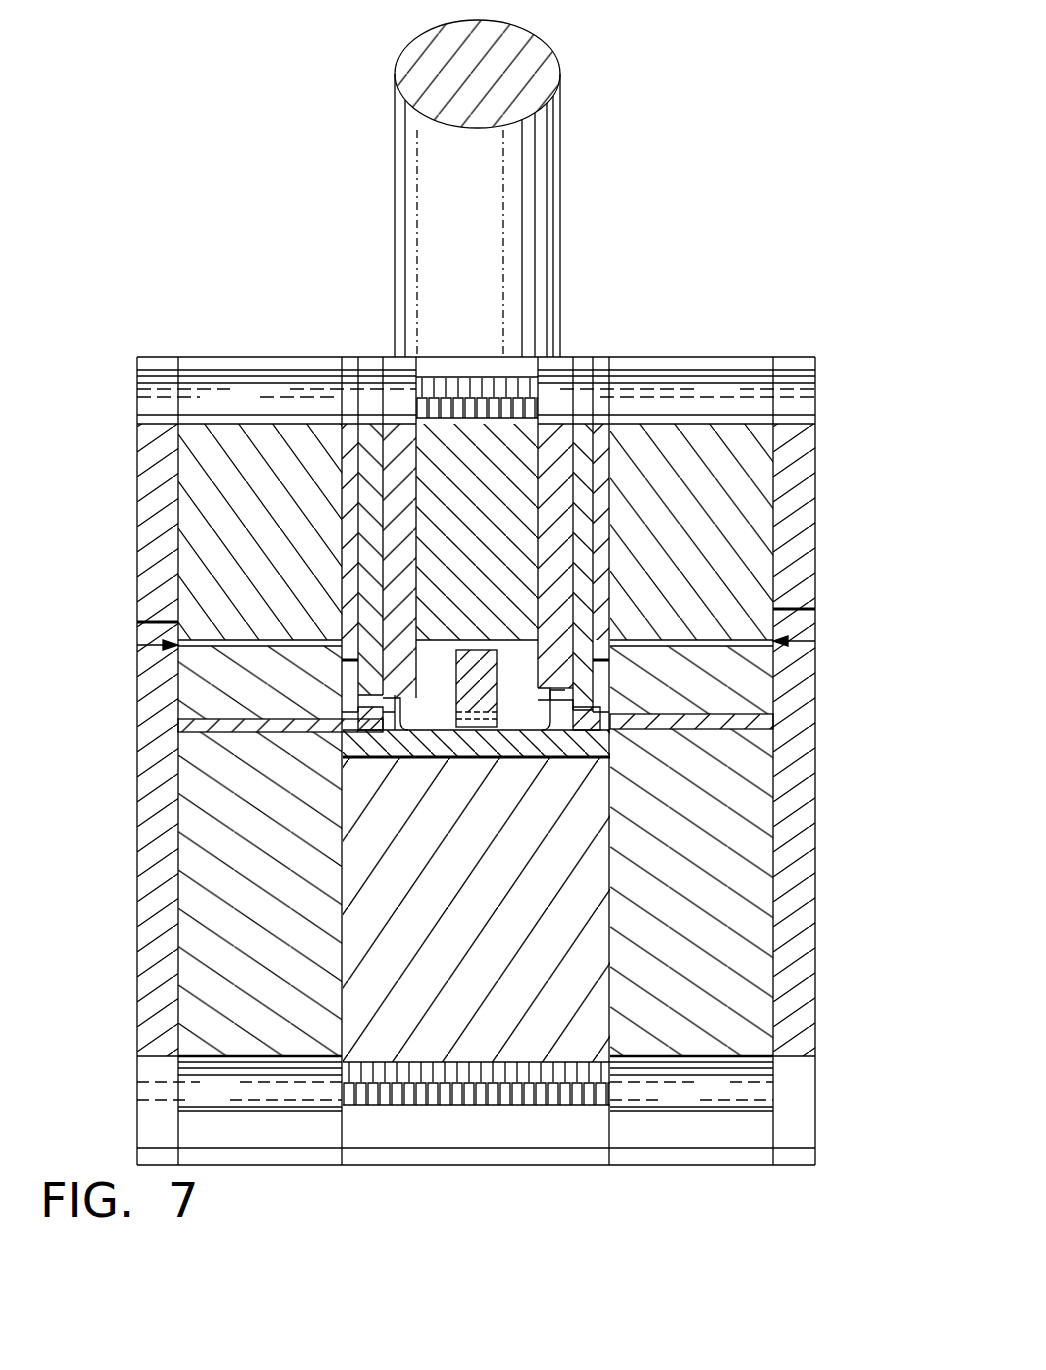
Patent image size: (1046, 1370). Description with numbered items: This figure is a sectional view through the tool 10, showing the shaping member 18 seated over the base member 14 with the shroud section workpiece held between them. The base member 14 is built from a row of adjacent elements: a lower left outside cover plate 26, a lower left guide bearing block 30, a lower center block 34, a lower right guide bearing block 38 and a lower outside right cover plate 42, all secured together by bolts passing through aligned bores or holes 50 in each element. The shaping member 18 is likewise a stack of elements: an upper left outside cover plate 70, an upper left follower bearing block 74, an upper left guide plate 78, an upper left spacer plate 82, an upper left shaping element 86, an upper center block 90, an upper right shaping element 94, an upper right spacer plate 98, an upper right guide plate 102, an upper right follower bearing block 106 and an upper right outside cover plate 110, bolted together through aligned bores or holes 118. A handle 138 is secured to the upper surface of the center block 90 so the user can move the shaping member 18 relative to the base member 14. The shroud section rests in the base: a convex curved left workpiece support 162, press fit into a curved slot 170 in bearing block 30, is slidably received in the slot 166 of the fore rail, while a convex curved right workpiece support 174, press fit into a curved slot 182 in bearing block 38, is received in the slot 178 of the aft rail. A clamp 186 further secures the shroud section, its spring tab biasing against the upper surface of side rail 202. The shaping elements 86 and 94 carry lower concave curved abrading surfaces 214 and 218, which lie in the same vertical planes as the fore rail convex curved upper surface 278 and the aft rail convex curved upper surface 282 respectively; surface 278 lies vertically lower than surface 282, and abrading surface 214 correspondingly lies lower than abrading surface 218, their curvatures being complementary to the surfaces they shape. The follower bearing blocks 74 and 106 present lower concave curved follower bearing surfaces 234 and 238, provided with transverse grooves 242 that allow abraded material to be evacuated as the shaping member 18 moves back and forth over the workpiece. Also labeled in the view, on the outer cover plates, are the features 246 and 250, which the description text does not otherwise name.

The tool 10 is at (657, 48).
The base member 14 is at (698, 1172).
The shaping member 18 is at (720, 302).
The lower left outside cover plate 26 is at (138, 1148).
The lower left guide bearing block 30 is at (270, 1165).
The lower center block 34 is at (500, 1165).
The lower right guide bearing block 38 is at (648, 1165).
The lower outside right cover plate 42 is at (795, 1165).
The bores or holes 50 is at (168, 1062).
The upper left outside cover plate 70 is at (150, 357).
The upper left follower bearing block 74 is at (208, 357).
The upper left guide plate 78 is at (343, 357).
The upper left spacer plate 82 is at (357, 357).
The upper left shaping element 86 is at (410, 377).
The upper center block 90 is at (442, 378).
The upper right shaping element 94 is at (565, 357).
The upper right spacer plate 98 is at (588, 357).
The upper right guide plate 102 is at (605, 357).
The upper right follower bearing block 106 is at (712, 357).
The upper right outside cover plate 110 is at (815, 357).
The bores or holes 118 is at (162, 377).
The handle 138 is at (483, 198).
The convex curved left workpiece support 162 is at (205, 740).
The slot 166 is at (230, 725).
The curved slot 170 is at (178, 752).
The convex curved right workpiece support 174 is at (685, 713).
The slot 178 is at (540, 745).
The curved slot 182 is at (722, 732).
The clamp 186 is at (470, 650).
The side rail 202 is at (400, 662).
The abrading surface 214 is at (395, 760).
The abrading surface 218 is at (527, 700).
The follower bearing surface 234 is at (200, 660).
The follower bearing surface 238 is at (785, 655).
The grooves 242 is at (160, 645).
The left ring 246 is at (200, 632).
The right ring 250 is at (780, 615).
The convex curved upper surface 278 is at (410, 688).
The convex curved upper surface 282 is at (598, 676).